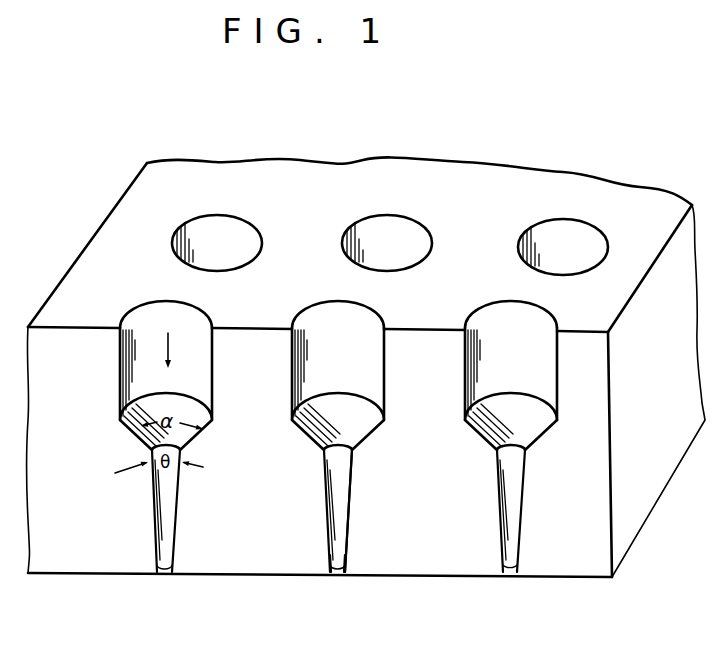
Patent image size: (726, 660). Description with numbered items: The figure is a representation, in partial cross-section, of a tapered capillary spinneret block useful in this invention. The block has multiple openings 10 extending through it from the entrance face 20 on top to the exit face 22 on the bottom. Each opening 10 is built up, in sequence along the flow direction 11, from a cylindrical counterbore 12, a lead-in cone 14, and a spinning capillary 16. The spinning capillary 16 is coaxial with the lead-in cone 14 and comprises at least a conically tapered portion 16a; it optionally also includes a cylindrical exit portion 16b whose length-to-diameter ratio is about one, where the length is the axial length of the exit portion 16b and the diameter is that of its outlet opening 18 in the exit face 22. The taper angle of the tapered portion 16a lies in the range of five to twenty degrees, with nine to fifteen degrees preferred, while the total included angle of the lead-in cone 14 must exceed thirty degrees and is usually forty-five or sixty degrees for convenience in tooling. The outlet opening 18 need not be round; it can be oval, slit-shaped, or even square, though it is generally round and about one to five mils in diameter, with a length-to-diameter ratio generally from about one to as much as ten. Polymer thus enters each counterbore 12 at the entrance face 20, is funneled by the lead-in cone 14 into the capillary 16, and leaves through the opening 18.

The opening 10 is at (358, 222).
The flow direction 11 is at (168, 347).
The cylindrical counterbore 12 is at (293, 368).
The lead-in cone 14 is at (308, 433).
The spinning capillary 16 is at (327, 507).
The conically tapered portion 16a is at (348, 520).
The cylindrical exit portion 16b is at (343, 562).
The outlet opening 18 is at (337, 575).
The entrance face 20 is at (431, 313).
The exit face 22 is at (432, 577).